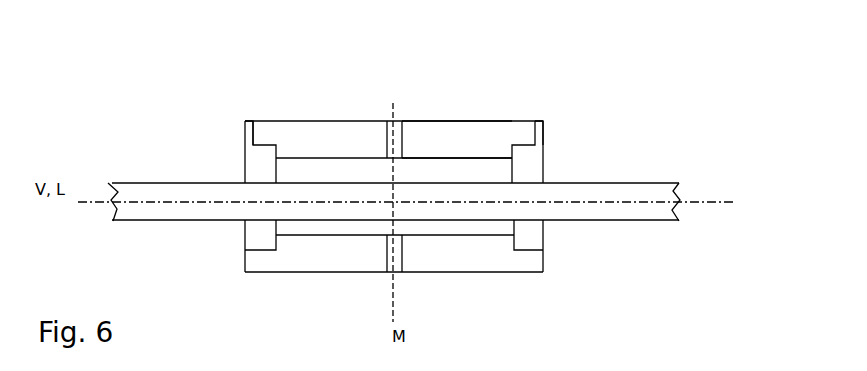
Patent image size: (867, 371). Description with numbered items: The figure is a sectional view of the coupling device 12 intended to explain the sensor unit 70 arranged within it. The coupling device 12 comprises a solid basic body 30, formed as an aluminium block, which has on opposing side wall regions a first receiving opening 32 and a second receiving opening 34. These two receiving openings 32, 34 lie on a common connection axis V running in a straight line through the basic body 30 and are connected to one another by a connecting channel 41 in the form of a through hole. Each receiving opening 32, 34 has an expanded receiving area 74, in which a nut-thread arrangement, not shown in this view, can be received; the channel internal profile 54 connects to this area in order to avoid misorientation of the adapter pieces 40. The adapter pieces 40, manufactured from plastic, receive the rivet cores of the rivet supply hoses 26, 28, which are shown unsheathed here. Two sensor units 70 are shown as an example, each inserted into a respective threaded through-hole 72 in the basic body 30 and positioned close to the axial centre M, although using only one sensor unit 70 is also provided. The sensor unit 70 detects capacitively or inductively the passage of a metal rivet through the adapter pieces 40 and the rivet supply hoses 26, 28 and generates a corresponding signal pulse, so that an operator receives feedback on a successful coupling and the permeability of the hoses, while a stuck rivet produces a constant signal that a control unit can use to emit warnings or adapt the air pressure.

The coupling device 12 is at (170, 91).
The rivet supply hose 26 is at (180, 208).
The rivet supply hose 28 is at (618, 208).
The basic body 30 is at (315, 146).
The first receiving opening 32 is at (228, 165).
The second receiving opening 34 is at (562, 165).
The adapter piece 40 is at (299, 221).
The connecting channel 41 is at (462, 109).
The channel internal profile 54 is at (487, 150).
The sensor unit 70 is at (404, 128).
The threaded through-hole 72 is at (388, 130).
The expanded receiving area 74 is at (247, 119).